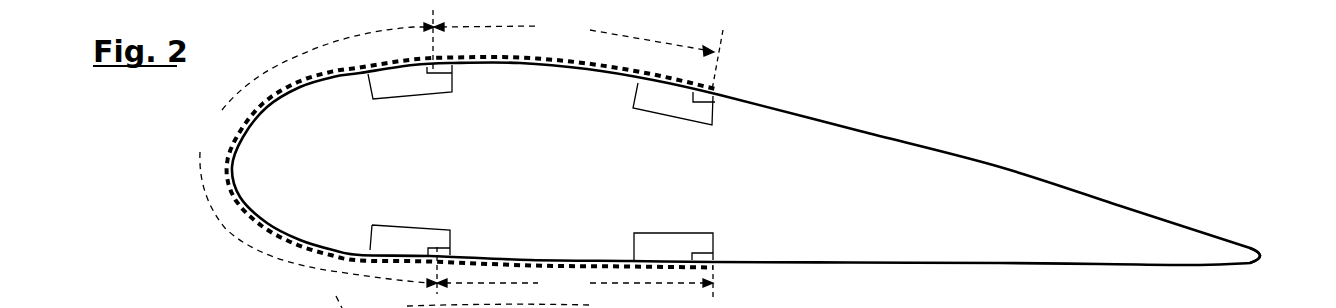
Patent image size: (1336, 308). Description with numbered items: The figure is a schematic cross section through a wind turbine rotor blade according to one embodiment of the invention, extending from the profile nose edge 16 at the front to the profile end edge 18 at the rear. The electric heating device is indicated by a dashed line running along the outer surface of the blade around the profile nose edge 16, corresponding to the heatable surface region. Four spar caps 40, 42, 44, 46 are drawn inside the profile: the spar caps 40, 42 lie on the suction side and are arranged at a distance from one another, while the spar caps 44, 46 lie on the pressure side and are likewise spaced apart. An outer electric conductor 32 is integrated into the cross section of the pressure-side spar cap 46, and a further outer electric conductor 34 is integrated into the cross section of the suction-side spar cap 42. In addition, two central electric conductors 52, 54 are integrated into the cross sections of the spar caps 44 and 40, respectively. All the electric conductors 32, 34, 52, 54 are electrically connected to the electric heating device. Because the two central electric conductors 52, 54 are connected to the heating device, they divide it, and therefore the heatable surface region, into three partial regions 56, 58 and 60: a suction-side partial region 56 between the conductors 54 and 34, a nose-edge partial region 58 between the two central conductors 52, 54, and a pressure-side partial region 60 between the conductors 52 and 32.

The profile nose edge 16 is at (223, 168).
The profile end edge 18 is at (1262, 255).
The outer electric conductor 32 is at (713, 253).
The outer electric conductor 34 is at (708, 100).
The spar cap 40 is at (405, 87).
The spar cap 42 is at (653, 101).
The spar cap 44 is at (403, 235).
The spar cap 46 is at (663, 245).
The central electric conductor 52 is at (437, 250).
The central electric conductor 54 is at (450, 68).
The partial region 56 is at (578, 49).
The partial region 58 is at (309, 155).
The partial region 60 is at (524, 277).